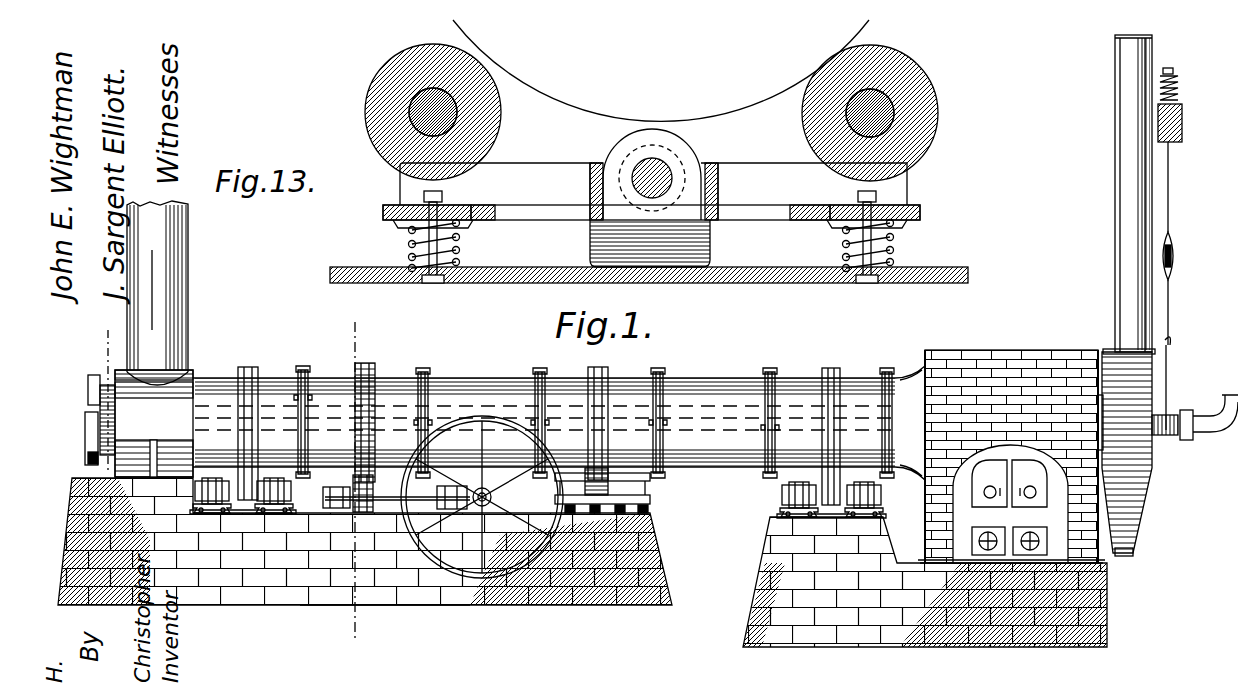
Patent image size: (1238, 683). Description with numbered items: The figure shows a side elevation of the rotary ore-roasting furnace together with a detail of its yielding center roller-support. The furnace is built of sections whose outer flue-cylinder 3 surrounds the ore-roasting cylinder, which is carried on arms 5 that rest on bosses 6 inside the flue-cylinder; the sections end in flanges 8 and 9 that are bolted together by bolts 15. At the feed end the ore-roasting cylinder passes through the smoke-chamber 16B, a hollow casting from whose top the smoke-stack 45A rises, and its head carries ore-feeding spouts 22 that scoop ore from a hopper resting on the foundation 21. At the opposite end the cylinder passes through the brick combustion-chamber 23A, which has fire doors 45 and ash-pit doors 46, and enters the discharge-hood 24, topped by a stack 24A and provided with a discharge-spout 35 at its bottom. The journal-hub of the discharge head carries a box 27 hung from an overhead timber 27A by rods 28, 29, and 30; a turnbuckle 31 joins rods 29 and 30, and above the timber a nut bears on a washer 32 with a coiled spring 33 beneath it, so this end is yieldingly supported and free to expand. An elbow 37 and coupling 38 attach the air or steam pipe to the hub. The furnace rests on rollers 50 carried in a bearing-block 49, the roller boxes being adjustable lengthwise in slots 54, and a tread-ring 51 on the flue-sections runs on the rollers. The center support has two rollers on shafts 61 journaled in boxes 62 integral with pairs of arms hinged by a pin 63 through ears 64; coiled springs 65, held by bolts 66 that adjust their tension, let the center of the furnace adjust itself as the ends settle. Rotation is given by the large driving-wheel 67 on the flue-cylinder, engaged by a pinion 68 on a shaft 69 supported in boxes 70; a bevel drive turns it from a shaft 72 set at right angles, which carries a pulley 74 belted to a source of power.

In FIG. 1, the flue-cylinder 3 is at (485, 378).
In FIG. 1, the arms 5 is at (355, 483).
In FIG. 1, the bosses 6 is at (105, 399).
In FIG. 1, the flange 8 is at (308, 372).
In FIG. 1, the flange 9 is at (418, 368).
In FIG. 1, the bolts 15 is at (297, 376).
In FIG. 1, the smoke-chamber 16B is at (154, 423).
In FIG. 1, the foundation 21 is at (72, 496).
In FIG. 1, the ore-feeding spouts 22 is at (88, 388).
In FIG. 1, the combustion-chamber 23A is at (1022, 350).
In FIG. 1, the discharge-hood 24 is at (1125, 452).
In FIG. 1, the stack 24A is at (1115, 222).
In FIG. 1, the box 27 is at (1165, 436).
In FIG. 1, the overhead timber 27A is at (1183, 128).
In FIG. 1, the rod 28 is at (1168, 374).
In FIG. 1, the rod 29 is at (1170, 306).
In FIG. 1, the rod 30 is at (1170, 170).
In FIG. 1, the turnbuckle 31 is at (1177, 254).
In FIG. 1, the washer 32 is at (1175, 74).
In FIG. 1, the coiled spring 33 is at (1180, 94).
In FIG. 1, the discharge-spout 35 is at (1124, 556).
In FIG. 1, the elbow 37 is at (1228, 434).
In FIG. 1, the coupling 38 is at (1190, 406).
In FIG. 1, the fire doors 45 is at (1017, 464).
In FIG. 1, the smoke-stack 45A is at (190, 296).
In FIG. 1, the ash-pit doors 46 is at (1009, 532).
In FIG. 1, the bearing-block 49 is at (292, 511).
In FIG. 1, the rollers 50 is at (538, 506).
In FIG. 1, the tread-ring 51 is at (248, 367).
In FIG. 1, the slots 54 is at (530, 506).
In FIG. 13, the shafts 61 is at (460, 119).
In FIG. 1, the shafts 61 is at (596, 481).
In FIG. 13, the boxes 62 is at (400, 62).
In FIG. 1, the boxes 62 is at (555, 478).
In FIG. 13, the pin 63 is at (660, 166).
In FIG. 13, the ears 64 is at (712, 242).
In FIG. 13, the coiled springs 65 is at (462, 245).
In FIG. 1, the coiled springs 65 is at (650, 511).
In FIG. 13, the bolts 66 is at (434, 282).
In FIG. 1, the driving-wheel 67 is at (368, 364).
In FIG. 1, the pinion 68 is at (362, 512).
In FIG. 1, the shaft 69 is at (388, 495).
In FIG. 1, the boxes 70 is at (440, 497).
In FIG. 1, the shaft 72 is at (493, 500).
In FIG. 1, the pulley 74 is at (428, 562).